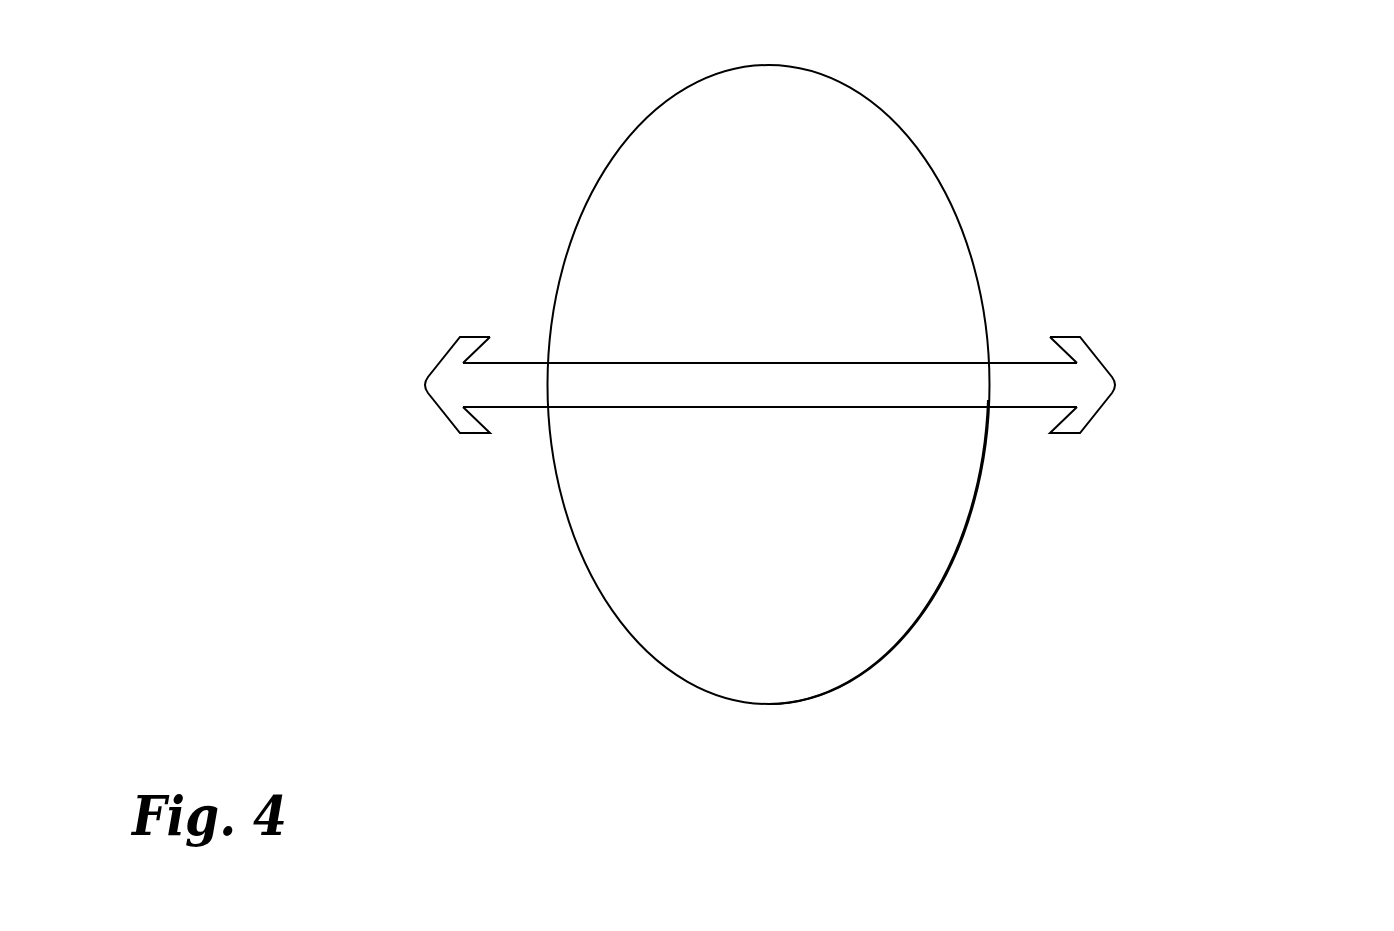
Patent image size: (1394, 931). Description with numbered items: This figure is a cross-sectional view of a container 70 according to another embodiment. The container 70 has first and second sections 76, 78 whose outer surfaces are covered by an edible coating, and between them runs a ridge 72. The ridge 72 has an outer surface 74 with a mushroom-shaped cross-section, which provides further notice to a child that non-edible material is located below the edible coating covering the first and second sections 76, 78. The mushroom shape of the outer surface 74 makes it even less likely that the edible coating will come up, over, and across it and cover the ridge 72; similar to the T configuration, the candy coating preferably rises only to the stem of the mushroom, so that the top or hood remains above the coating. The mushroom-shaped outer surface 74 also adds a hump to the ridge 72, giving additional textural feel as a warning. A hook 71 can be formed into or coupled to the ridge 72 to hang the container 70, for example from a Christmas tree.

The container 70 is at (1257, 50).
The hook 71 is at (1118, 386).
The ridge 72 is at (1012, 362).
The outer surface 74 is at (437, 405).
The first section 76 is at (917, 141).
The second section 78 is at (936, 598).